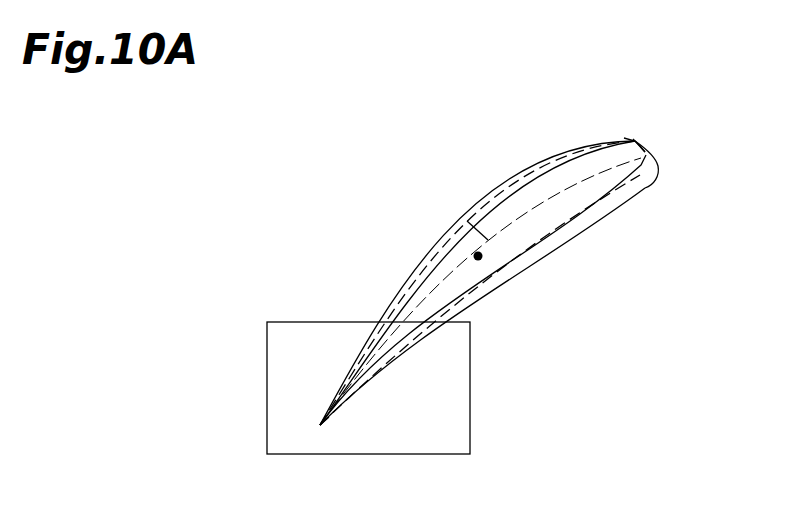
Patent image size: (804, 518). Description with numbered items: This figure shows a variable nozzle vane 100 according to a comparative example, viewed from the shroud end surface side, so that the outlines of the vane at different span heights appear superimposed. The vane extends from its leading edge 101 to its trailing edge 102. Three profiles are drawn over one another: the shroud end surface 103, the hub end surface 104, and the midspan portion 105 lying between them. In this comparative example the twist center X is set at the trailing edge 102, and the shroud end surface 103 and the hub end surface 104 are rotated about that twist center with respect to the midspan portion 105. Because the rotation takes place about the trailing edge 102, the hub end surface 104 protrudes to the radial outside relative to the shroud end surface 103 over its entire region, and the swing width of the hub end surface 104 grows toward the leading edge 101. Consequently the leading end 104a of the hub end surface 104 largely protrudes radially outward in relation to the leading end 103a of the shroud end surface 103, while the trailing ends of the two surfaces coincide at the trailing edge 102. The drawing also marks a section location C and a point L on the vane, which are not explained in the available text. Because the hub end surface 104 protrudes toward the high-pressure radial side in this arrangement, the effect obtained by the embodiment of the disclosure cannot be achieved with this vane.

The variable nozzle vane 100 is at (461, 158).
The leading edge 101 is at (646, 140).
The trailing edge 102 is at (318, 432).
The shroud end surface 103 is at (531, 229).
The leading end of the shroud end surface 103a is at (650, 156).
The hub end surface 104 is at (503, 182).
The leading end of the hub end surface 104a is at (632, 141).
The midspan portion 105 is at (551, 165).
The cross-section line C is at (464, 217).
The reference point L is at (481, 260).